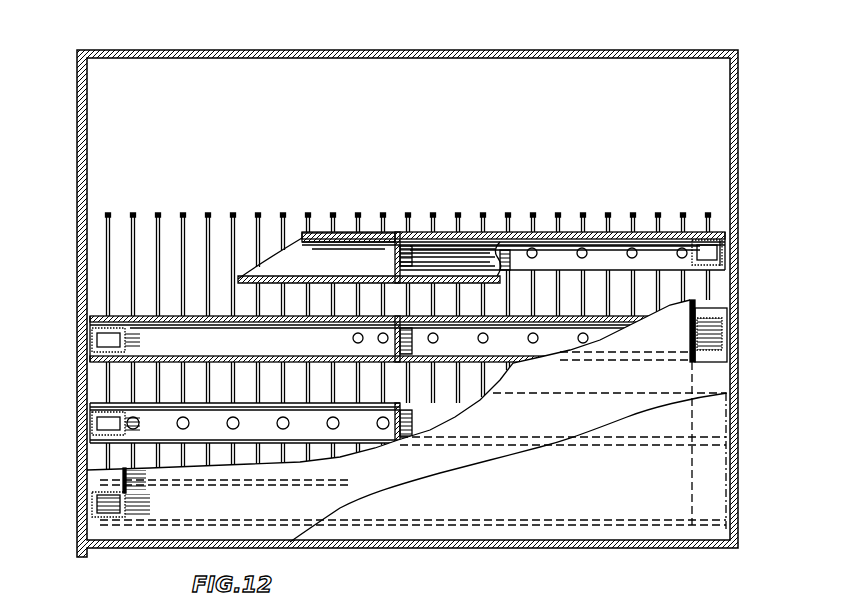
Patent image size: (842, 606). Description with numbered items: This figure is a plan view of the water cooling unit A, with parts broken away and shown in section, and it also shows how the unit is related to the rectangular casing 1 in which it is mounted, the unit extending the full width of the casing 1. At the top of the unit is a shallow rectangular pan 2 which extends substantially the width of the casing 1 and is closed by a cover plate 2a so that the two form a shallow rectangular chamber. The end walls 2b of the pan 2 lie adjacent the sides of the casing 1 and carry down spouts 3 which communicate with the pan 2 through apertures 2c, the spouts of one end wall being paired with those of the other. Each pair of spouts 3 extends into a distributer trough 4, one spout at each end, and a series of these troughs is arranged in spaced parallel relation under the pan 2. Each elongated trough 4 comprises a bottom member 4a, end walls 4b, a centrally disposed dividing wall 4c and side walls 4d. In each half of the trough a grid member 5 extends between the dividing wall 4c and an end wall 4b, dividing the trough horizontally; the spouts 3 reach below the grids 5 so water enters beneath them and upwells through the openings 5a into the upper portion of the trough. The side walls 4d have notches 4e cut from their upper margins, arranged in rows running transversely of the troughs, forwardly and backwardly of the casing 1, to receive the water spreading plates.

The casing 1 is at (78, 170).
The pan 2 is at (675, 327).
The cover plate 2a is at (737, 438).
The end walls 2b is at (727, 350).
The apertures 2c is at (717, 312).
The down spouts 3 is at (733, 217).
The distributer trough 4 is at (182, 340).
The bottom member 4a is at (302, 235).
The end walls 4b is at (728, 250).
The dividing wall 4c is at (430, 233).
The side walls 4d is at (366, 242).
The notches 4e is at (507, 265).
The grid member 5 is at (583, 248).
The openings 5a is at (633, 248).
The water cooling unit A is at (350, 276).